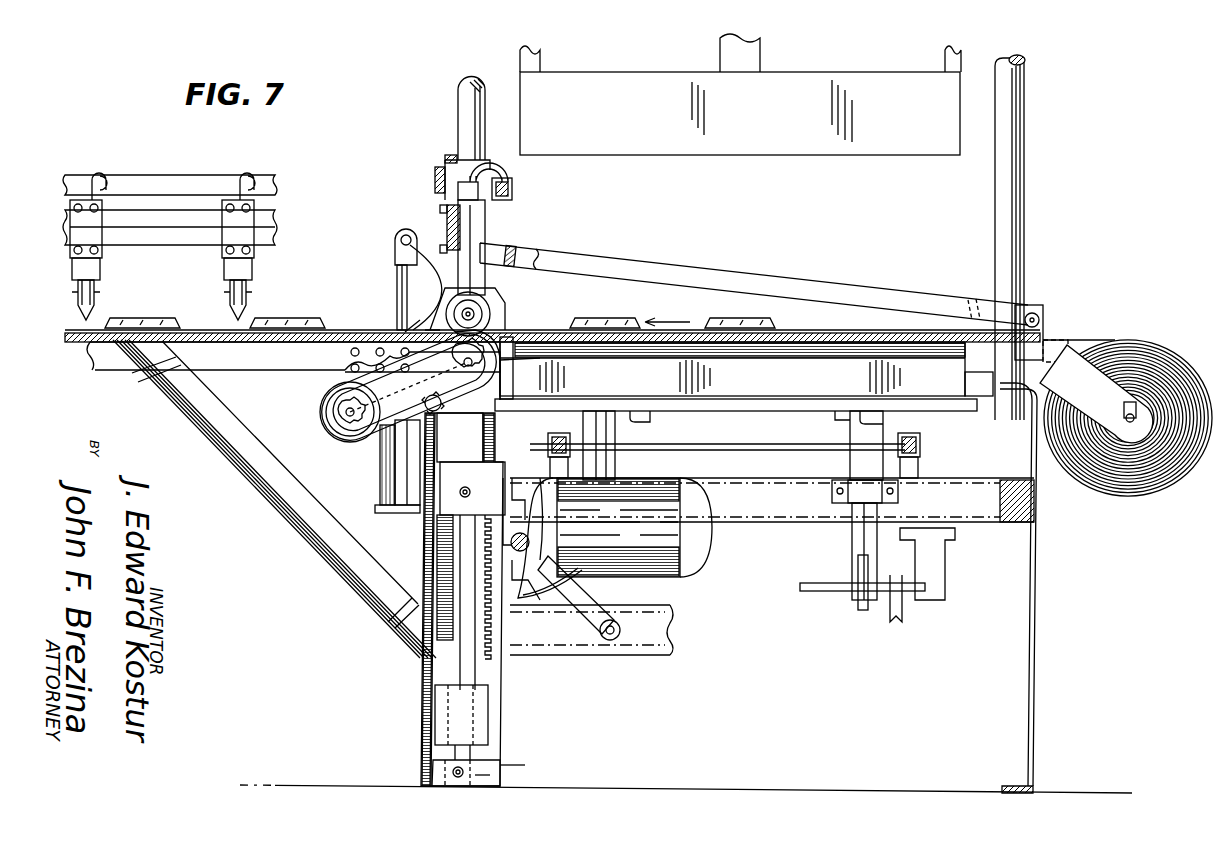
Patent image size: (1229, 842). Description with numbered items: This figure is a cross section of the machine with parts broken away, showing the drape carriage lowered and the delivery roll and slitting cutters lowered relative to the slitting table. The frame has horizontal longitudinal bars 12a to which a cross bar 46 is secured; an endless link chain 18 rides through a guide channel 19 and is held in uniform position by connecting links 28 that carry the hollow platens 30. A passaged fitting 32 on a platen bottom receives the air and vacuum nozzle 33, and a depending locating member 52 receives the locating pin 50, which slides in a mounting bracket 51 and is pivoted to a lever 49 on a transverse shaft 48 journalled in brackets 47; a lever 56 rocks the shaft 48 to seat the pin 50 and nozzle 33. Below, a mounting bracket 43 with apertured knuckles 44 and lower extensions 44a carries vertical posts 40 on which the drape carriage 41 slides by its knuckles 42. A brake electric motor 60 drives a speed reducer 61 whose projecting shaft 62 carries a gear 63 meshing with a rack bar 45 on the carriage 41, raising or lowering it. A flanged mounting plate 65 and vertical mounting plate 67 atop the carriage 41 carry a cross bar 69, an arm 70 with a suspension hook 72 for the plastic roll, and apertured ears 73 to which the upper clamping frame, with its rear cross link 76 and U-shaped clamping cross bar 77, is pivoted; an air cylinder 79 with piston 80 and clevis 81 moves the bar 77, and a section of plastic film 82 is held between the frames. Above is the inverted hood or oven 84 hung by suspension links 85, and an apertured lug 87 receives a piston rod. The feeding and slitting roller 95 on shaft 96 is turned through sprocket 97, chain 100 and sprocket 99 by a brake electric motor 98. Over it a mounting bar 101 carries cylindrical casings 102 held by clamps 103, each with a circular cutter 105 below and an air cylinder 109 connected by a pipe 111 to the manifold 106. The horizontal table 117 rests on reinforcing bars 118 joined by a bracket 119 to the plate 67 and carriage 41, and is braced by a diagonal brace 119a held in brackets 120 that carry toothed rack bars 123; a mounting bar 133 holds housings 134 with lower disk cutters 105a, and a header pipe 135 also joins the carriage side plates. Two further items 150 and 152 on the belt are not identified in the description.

The horizontal longitudinal bars 12a is at (1040, 505).
The endless link chain 18 is at (920, 448).
The upper metal guide channels 19 is at (920, 436).
The cross bars or connecting links 28 is at (755, 445).
The hollow platens 30 is at (736, 376).
The passaged metal fitting 32 is at (615, 460).
The air and vacuum nozzle 33 is at (606, 485).
The vertical posts or shafts 40 is at (475, 660).
The frame bracket or drape carriage 41 is at (422, 677).
The passaged knuckles 42 is at (390, 720).
The metal mounting bracket 43 is at (512, 765).
The apertured knuckles 44 is at (490, 465).
The apertured lower extensions 44a is at (480, 775).
The vertical rack bar 45 is at (437, 541).
The cross bar 46 is at (785, 512).
The depending journalling brackets 47 is at (945, 568).
The transverse shaft 48 is at (810, 592).
The metal arm or lever 49 is at (860, 610).
The locating pin 50 is at (855, 540).
The mounting bracket 51 is at (832, 495).
The depending locating members 52 is at (850, 462).
The lever 56 is at (895, 622).
The brake electric motor 60 is at (670, 560).
The built-in speed reducer 61 is at (600, 642).
The projecting shaft 62 is at (560, 575).
The gear 63 is at (525, 500).
The flanged mounting plate 65 is at (497, 295).
The vertical apertured mounting plate 67 is at (440, 295).
The stationary horizontal cross bar 69 is at (530, 372).
The parallel arm 70 is at (820, 350).
The recessed metal suspension hooks 72 is at (1090, 385).
The upwardly extending apertured ears 73 is at (1040, 316).
The rear cross link 76 is at (975, 300).
The U-shaped clamping cross bar 77 is at (545, 262).
The air cylinder 79 is at (375, 508).
The reciprocating pistons 80 is at (397, 293).
The clevises 81 is at (395, 240).
The plastic film 82 is at (1160, 485).
The inverted hood or oven 84 is at (850, 85).
The suspension links 85 is at (537, 72).
The apertured lug 87 is at (762, 62).
The feeding and slitting roller 95 is at (450, 380).
The horizontal shaft 96 is at (405, 318).
The sprocket 97 is at (508, 330).
The brake electric motor 98 is at (320, 412).
The sprocket 99 is at (352, 425).
The endless link chain 100 is at (380, 430).
The horizontal mounting bar 101 is at (485, 240).
The vertical cylindrical casings 102 is at (485, 220).
The clamps 103 is at (452, 225).
The disklike circular cutter 105 is at (482, 305).
The disk-like cutters 105a is at (250, 292).
The header pipe or manifold 106 is at (510, 185).
The air cylinders 109 is at (468, 191).
The nipples or flexible pipes 111 is at (445, 162).
The horizontal table 117 is at (200, 325).
The horizontal reinforcing bars 118 is at (285, 305).
The bracket 119 is at (355, 335).
The diagonal brace 119a is at (215, 432).
The brackets 120 is at (150, 365).
The toothed rack bars 123 is at (452, 155).
The horizontal mounting bar 133 is at (275, 228).
The vertical housings or casings 134 is at (100, 268).
The header pipe 135 is at (165, 178).
The pad 150 is at (605, 318).
The pad 152 is at (745, 318).